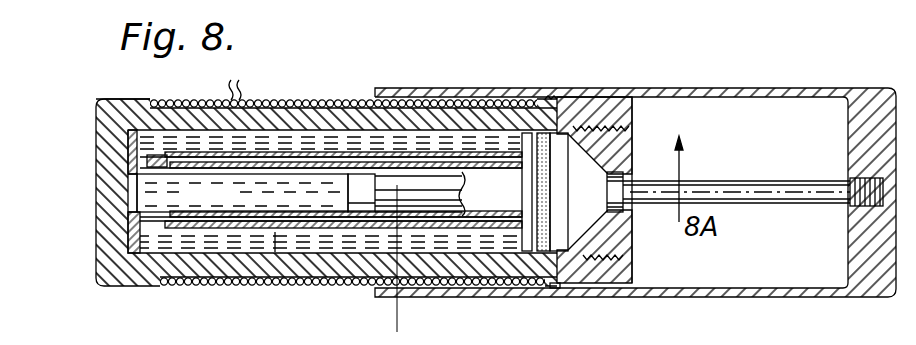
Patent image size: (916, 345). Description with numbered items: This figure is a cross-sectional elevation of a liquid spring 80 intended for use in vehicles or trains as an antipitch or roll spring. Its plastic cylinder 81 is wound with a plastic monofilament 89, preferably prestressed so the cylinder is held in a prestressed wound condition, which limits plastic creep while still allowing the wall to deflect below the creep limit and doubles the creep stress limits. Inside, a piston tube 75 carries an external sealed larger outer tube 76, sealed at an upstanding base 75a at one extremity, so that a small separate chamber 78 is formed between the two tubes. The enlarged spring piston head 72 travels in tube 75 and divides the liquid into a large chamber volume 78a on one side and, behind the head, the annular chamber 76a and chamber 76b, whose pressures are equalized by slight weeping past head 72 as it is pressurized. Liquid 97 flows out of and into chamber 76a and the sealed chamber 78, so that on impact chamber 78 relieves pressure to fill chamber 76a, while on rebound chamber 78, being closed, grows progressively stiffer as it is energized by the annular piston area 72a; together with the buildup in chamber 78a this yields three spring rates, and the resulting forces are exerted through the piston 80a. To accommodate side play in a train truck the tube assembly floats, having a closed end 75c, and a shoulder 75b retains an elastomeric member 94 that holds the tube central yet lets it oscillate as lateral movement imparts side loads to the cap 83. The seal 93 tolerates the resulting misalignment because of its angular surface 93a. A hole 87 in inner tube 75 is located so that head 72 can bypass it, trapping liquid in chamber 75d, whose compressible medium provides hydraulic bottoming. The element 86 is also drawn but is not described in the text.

The liquid spring 80 is at (638, 151).
The cap 83 is at (879, 89).
The hole 87 is at (128, 241).
The plastic cylinder 81 is at (282, 99).
The plastic monofilament 89 is at (218, 81).
The upstanding base 75a is at (147, 99).
The elastomeric member 94 is at (158, 153).
The chamber 75d is at (130, 186).
The closed end 75c is at (132, 193).
The shoulder 75b is at (135, 233).
The piston tube 75 is at (262, 151).
The outer tube 76 is at (365, 165).
The chamber 78 is at (303, 166).
The liquid 97 is at (345, 240).
The chamber volume 78a is at (275, 240).
The chamber 76b is at (242, 190).
The enlarged spring piston head 72 is at (355, 188).
The annular piston area 72a is at (378, 178).
The annular chamber 76a is at (446, 170).
The seal 93 is at (623, 189).
The angular surface 93a is at (633, 129).
The piston 80a is at (808, 180).
The stop 86 is at (553, 290).